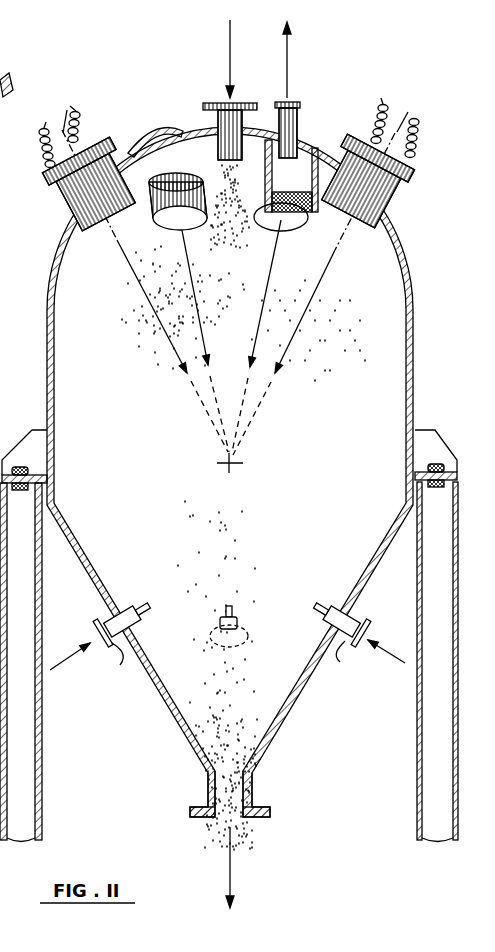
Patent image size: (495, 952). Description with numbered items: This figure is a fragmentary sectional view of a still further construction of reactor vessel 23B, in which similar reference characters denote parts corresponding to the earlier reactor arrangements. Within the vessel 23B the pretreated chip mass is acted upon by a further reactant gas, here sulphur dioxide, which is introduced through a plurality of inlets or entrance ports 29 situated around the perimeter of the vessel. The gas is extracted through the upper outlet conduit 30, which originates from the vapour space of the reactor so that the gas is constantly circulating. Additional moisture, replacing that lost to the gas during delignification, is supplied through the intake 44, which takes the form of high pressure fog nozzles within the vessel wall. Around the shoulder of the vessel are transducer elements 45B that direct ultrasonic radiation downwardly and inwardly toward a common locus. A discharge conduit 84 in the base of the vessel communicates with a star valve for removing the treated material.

The reactor vessel 23B is at (415, 372).
The conduit 30 is at (294, 100).
The transducer elements 45B is at (397, 147).
The entrance ports 29 is at (108, 630).
The inlets 44 is at (236, 613).
The discharge conduit 84 is at (253, 790).